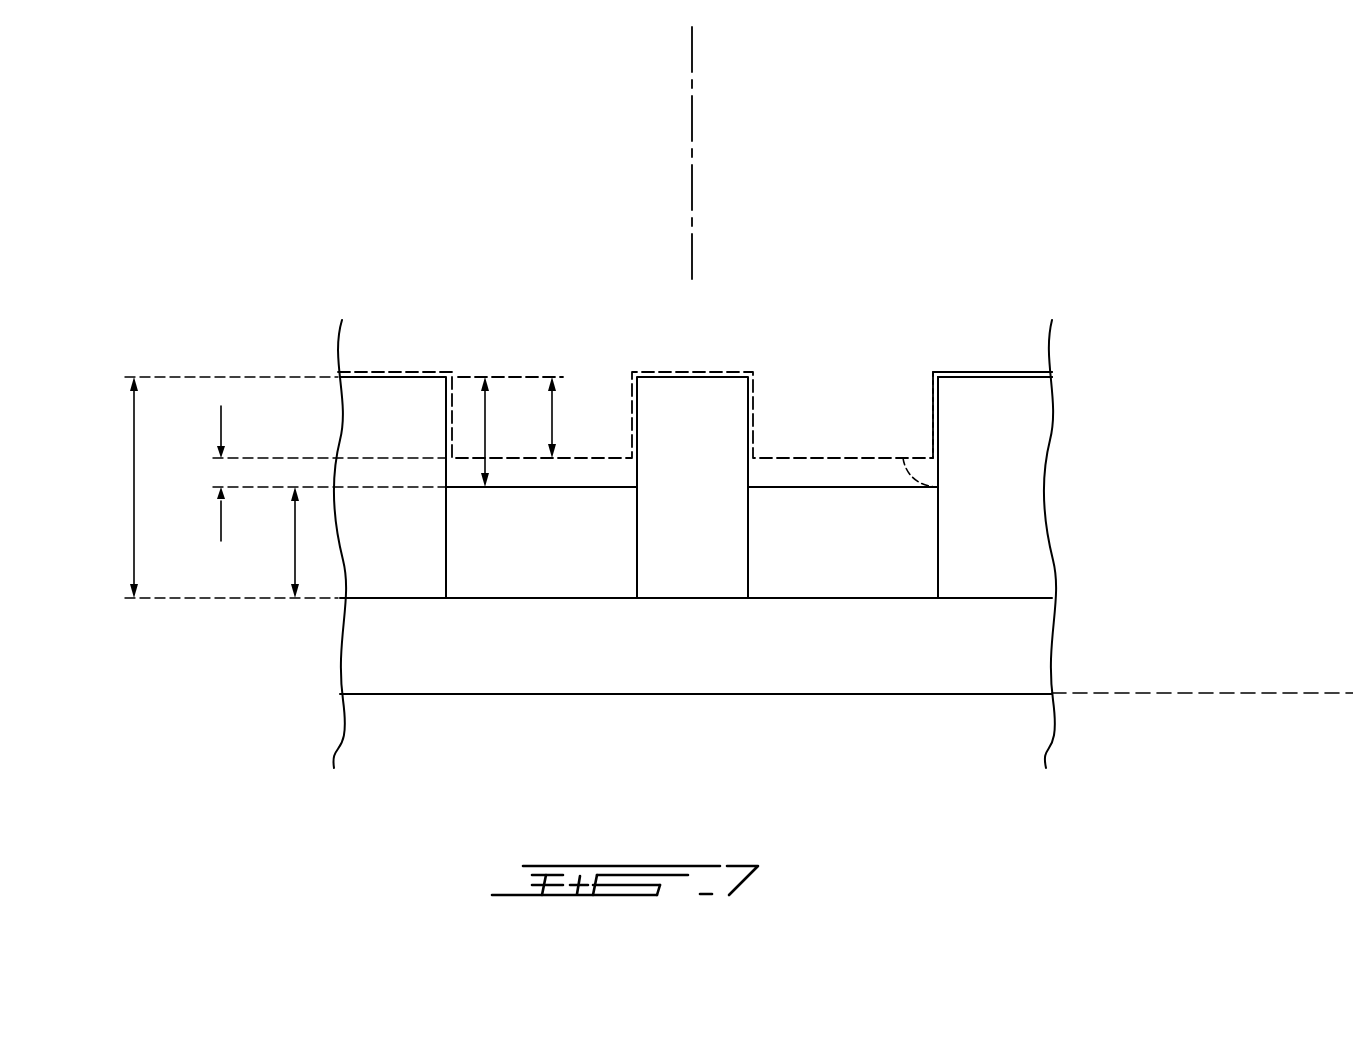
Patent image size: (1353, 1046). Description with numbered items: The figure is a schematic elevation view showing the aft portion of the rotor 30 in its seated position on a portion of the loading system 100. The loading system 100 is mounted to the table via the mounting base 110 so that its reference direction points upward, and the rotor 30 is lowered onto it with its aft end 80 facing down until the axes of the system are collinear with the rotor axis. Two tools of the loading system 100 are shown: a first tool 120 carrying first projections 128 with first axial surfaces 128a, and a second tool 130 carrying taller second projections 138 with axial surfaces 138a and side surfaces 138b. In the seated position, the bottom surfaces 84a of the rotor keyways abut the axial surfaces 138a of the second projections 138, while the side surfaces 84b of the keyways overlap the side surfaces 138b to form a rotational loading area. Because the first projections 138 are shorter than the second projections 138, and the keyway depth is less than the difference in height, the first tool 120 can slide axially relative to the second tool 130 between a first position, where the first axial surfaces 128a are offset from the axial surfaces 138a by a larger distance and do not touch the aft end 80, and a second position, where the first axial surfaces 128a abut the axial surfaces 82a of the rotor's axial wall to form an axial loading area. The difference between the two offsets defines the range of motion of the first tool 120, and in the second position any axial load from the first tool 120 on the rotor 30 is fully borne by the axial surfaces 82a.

The loading system 100 is at (606, 569).
The mounting base 110 is at (795, 598).
The first tool 120 is at (692, 637).
The first projections 128 is at (518, 562).
The first axial surfaces 128a is at (810, 488).
The second tool 130 is at (696, 582).
The second projections 138 is at (690, 562).
The axial surfaces of the second projections 138a is at (984, 378).
The side surfaces of the second projections 138b is at (933, 407).
The rotor 30 is at (624, 321).
The aft end 80 is at (624, 321).
The axial surfaces of the axial wall 82a is at (935, 487).
The bottom surfaces of the keyways 84a is at (1022, 377).
The side surfaces of the keyways 84b is at (938, 427).